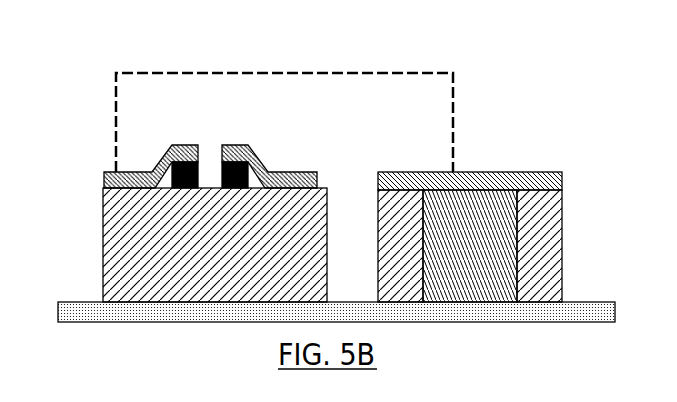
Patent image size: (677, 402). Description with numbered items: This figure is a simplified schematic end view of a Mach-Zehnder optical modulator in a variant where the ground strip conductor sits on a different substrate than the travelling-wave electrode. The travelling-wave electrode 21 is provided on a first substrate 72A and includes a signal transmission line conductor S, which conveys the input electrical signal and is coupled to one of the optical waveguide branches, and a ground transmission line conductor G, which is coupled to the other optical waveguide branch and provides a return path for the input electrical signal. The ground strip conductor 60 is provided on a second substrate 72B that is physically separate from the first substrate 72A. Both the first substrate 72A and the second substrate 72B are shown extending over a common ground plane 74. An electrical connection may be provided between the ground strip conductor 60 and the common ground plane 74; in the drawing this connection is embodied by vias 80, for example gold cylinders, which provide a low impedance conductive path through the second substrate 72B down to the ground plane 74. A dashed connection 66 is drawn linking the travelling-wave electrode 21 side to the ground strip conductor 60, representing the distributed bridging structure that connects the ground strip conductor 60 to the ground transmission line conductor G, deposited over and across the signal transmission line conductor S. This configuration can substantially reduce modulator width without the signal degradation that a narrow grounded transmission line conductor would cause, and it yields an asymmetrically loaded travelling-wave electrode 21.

The travelling-wave electrode 21 is at (214, 127).
The ground strip conductor 60 is at (512, 172).
The electrical connection 66 is at (398, 72).
The first substrate 72A is at (112, 233).
The second substrate 72B is at (555, 245).
The common ground plane 74 is at (600, 323).
The vias 80 is at (473, 287).
The ground transmission line conductor G is at (136, 171).
The signal transmission line conductor S is at (303, 172).